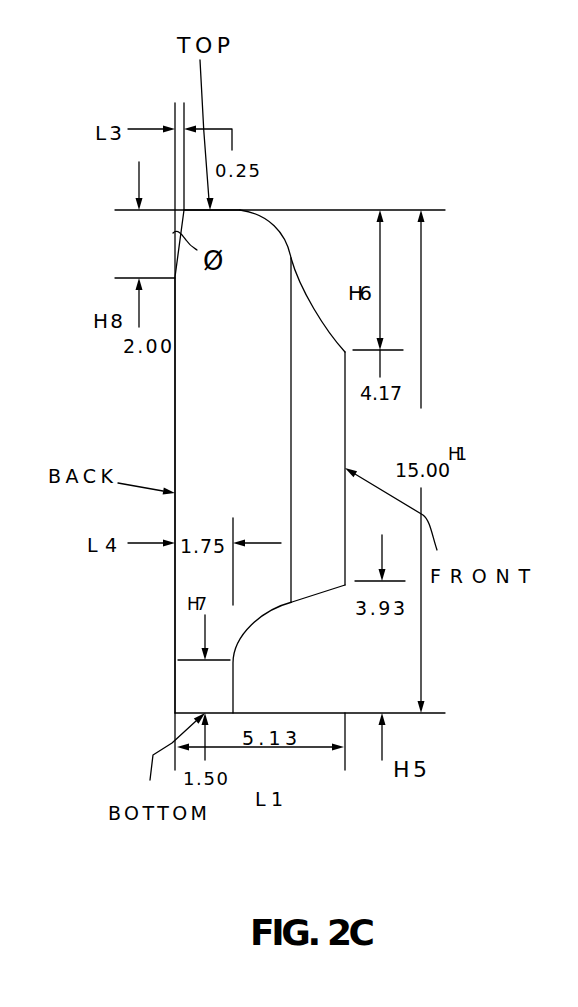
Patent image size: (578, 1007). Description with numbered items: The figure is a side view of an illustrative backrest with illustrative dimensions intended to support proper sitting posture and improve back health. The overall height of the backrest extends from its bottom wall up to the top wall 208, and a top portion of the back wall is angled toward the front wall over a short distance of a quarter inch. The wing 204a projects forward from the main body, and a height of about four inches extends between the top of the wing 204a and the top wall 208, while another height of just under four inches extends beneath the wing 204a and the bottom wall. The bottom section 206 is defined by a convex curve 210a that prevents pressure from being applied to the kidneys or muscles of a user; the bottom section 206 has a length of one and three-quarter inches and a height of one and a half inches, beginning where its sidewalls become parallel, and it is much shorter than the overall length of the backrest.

The bottom section 206 is at (176, 436).
The top wall 208 is at (232, 210).
The wing 204a is at (319, 290).
The convex curve 210a is at (255, 625).